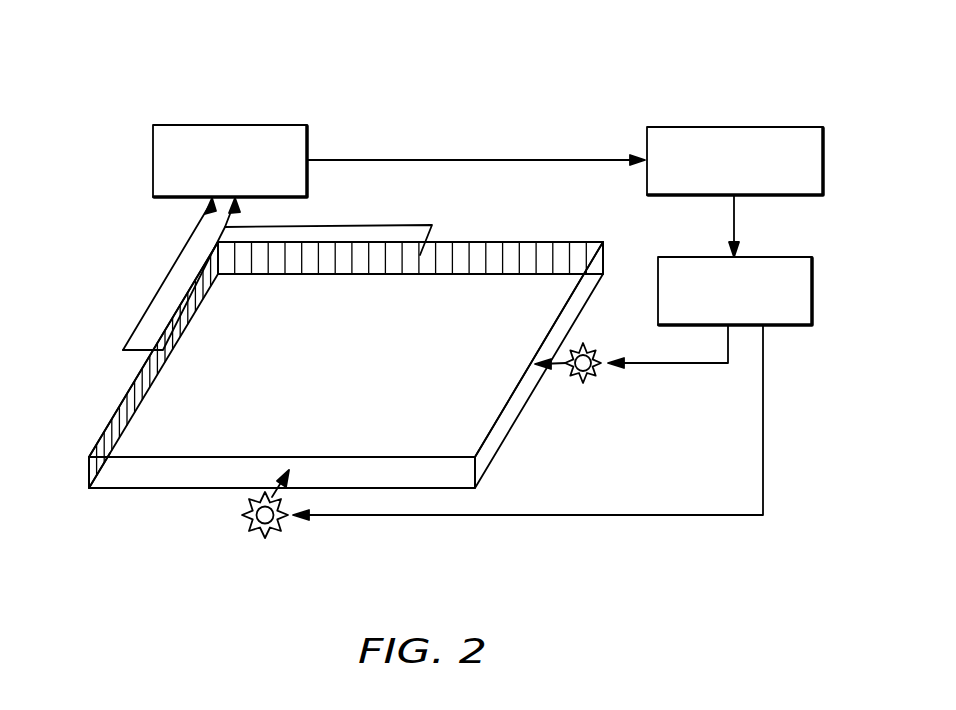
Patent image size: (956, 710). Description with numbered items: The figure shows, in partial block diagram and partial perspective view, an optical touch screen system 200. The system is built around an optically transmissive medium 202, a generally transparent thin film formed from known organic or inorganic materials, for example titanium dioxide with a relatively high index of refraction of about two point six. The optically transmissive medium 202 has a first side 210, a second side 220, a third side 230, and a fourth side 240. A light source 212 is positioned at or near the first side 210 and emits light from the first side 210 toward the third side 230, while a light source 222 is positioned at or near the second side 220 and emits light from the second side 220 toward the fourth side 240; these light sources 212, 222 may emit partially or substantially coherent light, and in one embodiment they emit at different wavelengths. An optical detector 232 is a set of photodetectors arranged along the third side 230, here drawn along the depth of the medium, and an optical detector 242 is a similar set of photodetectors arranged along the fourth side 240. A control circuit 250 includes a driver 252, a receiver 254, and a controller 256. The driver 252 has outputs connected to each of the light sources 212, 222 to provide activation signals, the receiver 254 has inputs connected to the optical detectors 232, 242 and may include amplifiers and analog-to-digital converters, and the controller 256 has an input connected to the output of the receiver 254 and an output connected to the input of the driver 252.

The optical touch screen system 200 is at (146, 33).
The optically transmissive medium 202 is at (346, 396).
The first side 210 is at (485, 457).
The light source 212 is at (583, 382).
The second side 220 is at (150, 478).
The light source 222 is at (270, 533).
The third side 230 is at (118, 365).
The optical detector 232 is at (110, 417).
The fourth side 240 is at (444, 225).
The optical detector 242 is at (592, 248).
The control circuit 250 is at (721, 179).
The driver 252 is at (763, 254).
The receiver 254 is at (223, 123).
The controller 256 is at (645, 137).